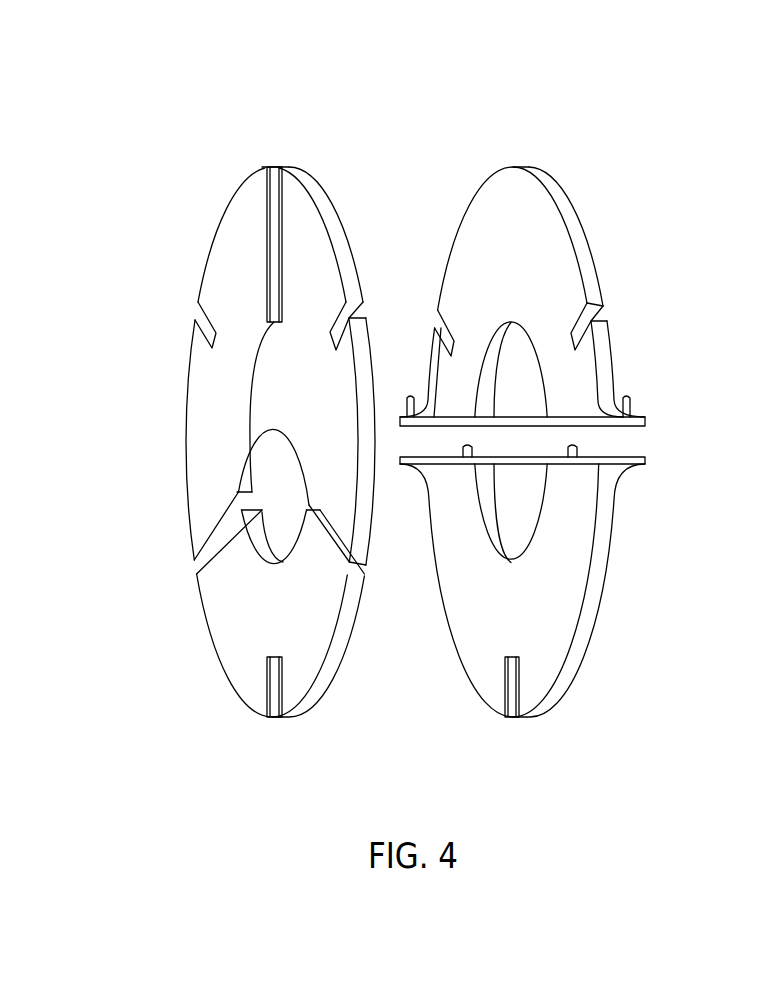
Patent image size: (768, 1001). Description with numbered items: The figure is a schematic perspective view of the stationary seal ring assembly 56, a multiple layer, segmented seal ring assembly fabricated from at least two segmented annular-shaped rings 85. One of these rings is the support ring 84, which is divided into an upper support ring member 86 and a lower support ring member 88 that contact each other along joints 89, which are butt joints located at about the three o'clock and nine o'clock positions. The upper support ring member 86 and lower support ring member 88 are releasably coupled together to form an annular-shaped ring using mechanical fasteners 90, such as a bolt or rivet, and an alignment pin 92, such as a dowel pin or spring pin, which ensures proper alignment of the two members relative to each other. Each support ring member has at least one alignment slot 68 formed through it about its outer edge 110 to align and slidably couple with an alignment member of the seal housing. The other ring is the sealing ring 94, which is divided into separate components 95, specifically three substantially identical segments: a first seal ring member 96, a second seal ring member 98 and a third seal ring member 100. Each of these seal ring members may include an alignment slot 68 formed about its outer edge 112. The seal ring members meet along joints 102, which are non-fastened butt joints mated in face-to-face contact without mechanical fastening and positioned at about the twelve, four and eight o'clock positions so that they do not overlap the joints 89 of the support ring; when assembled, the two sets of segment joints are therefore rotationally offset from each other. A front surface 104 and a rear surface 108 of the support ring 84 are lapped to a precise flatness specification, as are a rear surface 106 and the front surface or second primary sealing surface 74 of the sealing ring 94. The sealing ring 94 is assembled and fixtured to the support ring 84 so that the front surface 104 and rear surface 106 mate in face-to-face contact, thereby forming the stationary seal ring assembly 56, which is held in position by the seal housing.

The stationary seal ring assembly 56 is at (462, 67).
The alignment slot 68 is at (195, 313).
The second primary sealing surface 74 is at (232, 602).
The support ring 84 is at (665, 432).
The segmented annular-shaped rings 85 is at (420, 190).
The upper support ring member 86 is at (598, 263).
The lower support ring member 88 is at (593, 637).
The joints 89 is at (488, 445).
The mechanical fasteners 90 is at (627, 398).
The alignment pin 92 is at (575, 446).
The sealing ring 94 is at (115, 418).
The separate components 95 is at (305, 400).
The first seal ring member 96 is at (230, 205).
The second seal ring member 98 is at (337, 203).
The third seal ring member 100 is at (238, 697).
The joints 102 is at (278, 157).
The front surface 104 is at (550, 632).
The rear surface 106 is at (310, 633).
The rear surface 108 is at (565, 573).
The outer edge 110 is at (578, 233).
The outer edge 112 is at (315, 186).